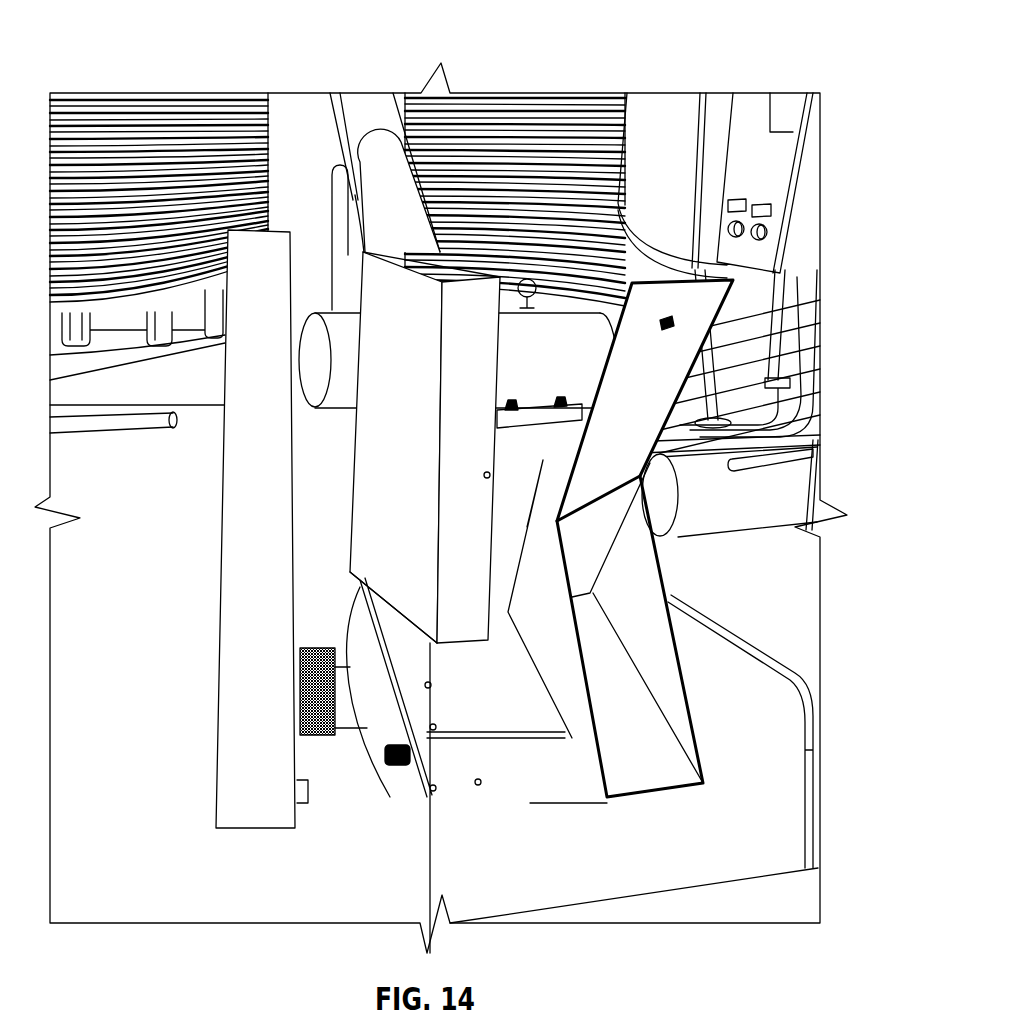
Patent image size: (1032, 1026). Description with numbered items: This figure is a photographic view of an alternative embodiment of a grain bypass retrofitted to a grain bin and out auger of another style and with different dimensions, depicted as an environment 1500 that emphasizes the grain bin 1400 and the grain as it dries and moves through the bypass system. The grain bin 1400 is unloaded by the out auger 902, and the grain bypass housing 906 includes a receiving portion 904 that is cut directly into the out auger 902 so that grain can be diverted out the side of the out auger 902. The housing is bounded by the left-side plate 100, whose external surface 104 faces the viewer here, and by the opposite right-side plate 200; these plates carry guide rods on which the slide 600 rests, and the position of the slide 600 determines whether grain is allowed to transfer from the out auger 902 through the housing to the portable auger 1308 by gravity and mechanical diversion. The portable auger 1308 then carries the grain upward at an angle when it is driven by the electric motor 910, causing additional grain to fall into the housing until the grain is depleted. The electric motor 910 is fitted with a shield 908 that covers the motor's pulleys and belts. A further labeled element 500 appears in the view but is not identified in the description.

The left-side plate 100 is at (556, 667).
The external surface 104 is at (575, 718).
The right-side plate 200 is at (681, 703).
The bottom shelf 500 is at (641, 778).
The slide 600 is at (680, 383).
The out auger 902 is at (818, 465).
The receiving portion 904 is at (780, 453).
The grain bypass housing 906 is at (546, 459).
The shield 908 is at (419, 431).
The electric motor 910 is at (568, 373).
The portable auger 1308 is at (363, 113).
The grain bin 1400 is at (143, 130).
The environment 1500 is at (404, 60).